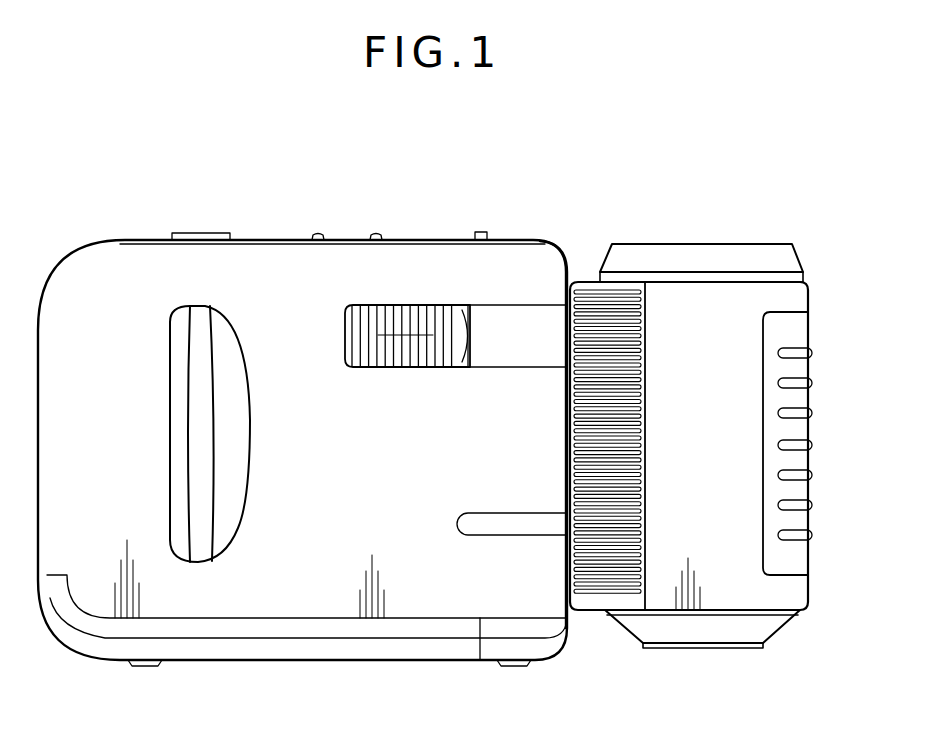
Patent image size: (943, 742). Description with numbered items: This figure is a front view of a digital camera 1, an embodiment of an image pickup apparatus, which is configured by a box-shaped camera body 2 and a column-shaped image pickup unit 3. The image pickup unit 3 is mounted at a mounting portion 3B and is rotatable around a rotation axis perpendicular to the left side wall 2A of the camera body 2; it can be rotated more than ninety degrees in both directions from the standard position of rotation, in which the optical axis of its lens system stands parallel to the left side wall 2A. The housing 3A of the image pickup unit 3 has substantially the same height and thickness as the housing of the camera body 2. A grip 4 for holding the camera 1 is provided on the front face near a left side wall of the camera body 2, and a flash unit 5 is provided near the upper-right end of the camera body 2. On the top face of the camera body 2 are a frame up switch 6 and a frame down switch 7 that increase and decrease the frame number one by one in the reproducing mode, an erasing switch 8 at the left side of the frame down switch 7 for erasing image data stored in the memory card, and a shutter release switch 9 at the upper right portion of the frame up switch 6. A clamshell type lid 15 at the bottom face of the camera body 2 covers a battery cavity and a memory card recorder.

The digital camera 1 is at (329, 153).
The camera body 2 is at (513, 212).
The left side wall 2A is at (568, 268).
The image pickup unit 3 is at (708, 229).
The housing 3A is at (795, 297).
The mounting portion 3B is at (600, 590).
The grip 4 is at (230, 522).
The flash unit 5 is at (402, 360).
The frame up switch 6 is at (317, 235).
The frame down switch 7 is at (375, 235).
The erasing switch 8 is at (480, 232).
The shutter release switch 9 is at (195, 232).
The clamshell type lid 15 is at (338, 650).